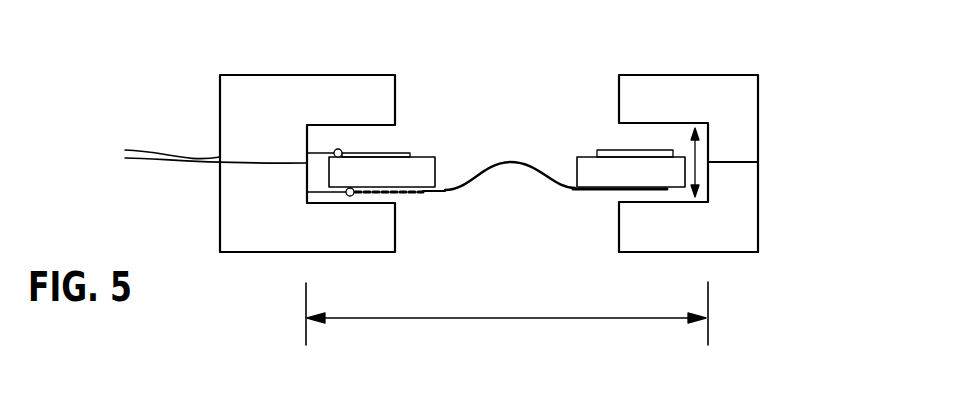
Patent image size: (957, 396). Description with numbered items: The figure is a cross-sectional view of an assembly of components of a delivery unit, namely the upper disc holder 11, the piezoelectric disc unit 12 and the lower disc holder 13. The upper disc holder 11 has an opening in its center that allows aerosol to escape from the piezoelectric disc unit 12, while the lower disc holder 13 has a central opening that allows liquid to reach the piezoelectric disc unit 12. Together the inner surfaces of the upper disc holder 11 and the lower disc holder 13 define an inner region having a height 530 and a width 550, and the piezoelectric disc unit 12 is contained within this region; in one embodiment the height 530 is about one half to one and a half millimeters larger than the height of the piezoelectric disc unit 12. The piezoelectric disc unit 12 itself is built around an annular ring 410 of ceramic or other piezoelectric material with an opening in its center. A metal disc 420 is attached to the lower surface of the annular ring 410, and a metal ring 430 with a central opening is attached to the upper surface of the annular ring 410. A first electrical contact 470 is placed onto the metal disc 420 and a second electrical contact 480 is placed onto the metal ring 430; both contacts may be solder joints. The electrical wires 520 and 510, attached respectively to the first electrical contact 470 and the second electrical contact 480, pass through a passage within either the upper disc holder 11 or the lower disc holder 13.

The upper disc holder 11 is at (657, 92).
The piezoelectric disc unit 12 is at (541, 90).
The lower disc holder 13 is at (720, 233).
The annular ring 410 is at (428, 172).
The metal disc 420 is at (587, 192).
The metal ring 430 is at (400, 152).
The first electrical contact 470 is at (350, 197).
The second electrical contact 480 is at (340, 148).
The electrical wire 510 is at (143, 148).
The electrical wire 520 is at (143, 166).
The height 530 is at (697, 152).
The width 550 is at (490, 318).